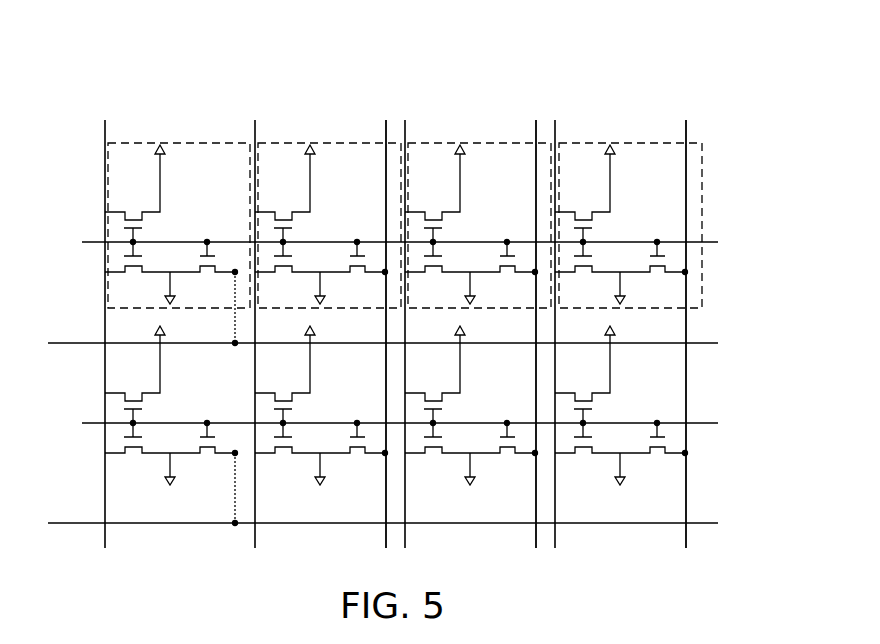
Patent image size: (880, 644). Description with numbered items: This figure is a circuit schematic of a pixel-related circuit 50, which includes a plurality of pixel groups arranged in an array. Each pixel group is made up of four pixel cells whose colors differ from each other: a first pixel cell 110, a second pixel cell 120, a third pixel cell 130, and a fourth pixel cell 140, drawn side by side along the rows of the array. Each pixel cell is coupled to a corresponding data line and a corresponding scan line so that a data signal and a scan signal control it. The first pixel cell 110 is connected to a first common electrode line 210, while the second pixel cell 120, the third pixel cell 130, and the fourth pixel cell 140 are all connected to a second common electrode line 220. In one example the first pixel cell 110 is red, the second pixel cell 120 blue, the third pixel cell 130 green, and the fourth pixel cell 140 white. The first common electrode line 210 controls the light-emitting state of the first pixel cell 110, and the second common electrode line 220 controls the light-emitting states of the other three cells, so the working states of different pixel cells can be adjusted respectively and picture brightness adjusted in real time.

The pixel-related circuit 50 is at (632, 37).
The first pixel cell 110 is at (178, 141).
The second pixel cell 120 is at (328, 141).
The third pixel cell 130 is at (478, 141).
The fourth pixel cell 140 is at (627, 141).
The first common electrode line 210 is at (700, 343).
The second common electrode line 220 is at (386, 120).